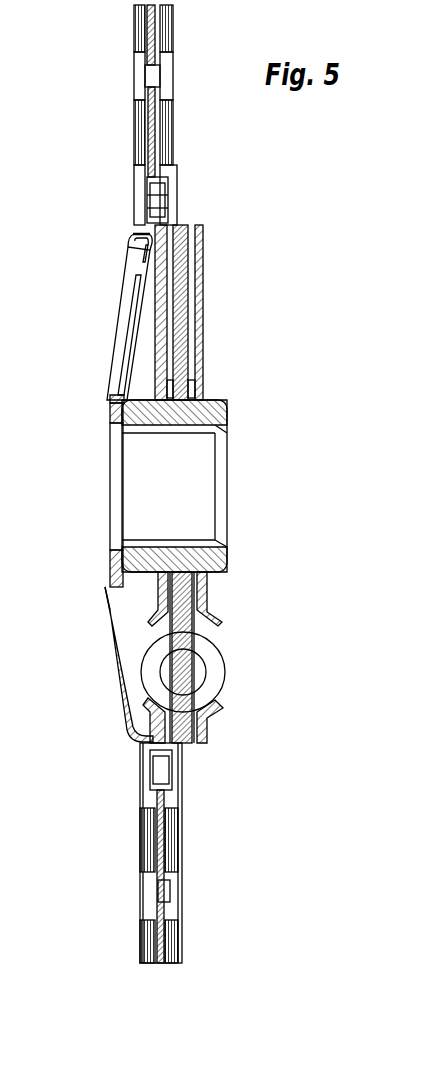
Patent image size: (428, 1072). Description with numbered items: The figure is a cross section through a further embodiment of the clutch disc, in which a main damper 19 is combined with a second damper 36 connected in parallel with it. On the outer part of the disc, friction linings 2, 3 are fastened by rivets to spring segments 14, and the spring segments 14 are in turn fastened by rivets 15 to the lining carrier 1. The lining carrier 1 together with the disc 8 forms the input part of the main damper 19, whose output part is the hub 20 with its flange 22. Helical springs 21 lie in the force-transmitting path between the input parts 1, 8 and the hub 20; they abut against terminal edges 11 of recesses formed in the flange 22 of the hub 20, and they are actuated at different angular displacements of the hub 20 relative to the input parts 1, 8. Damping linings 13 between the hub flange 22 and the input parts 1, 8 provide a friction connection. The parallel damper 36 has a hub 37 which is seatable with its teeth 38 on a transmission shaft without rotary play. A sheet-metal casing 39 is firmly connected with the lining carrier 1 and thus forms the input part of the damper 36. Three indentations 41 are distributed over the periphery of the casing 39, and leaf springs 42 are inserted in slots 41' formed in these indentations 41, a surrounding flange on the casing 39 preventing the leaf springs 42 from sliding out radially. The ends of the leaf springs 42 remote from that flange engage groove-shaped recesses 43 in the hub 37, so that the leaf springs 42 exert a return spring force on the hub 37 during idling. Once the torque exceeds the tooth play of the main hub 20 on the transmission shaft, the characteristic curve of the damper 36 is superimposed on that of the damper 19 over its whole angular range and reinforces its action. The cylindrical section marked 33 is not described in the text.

The lining carrier 1 is at (150, 742).
The friction lining 2 is at (145, 25).
The friction lining 3 is at (170, 32).
The disc 8 is at (207, 728).
The terminal edges 11 is at (183, 676).
The damping linings 13 is at (210, 373).
The spring segments 14 is at (155, 132).
The rivets 15 is at (157, 202).
The main damper 19 is at (277, 729).
The hub 20 is at (230, 560).
The helical springs 21 is at (213, 662).
The hub flange 22 is at (180, 288).
The cylinder body 33 is at (174, 486).
The damper 36 is at (38, 382).
The hub 37 is at (118, 571).
The teeth 38 is at (118, 543).
The sheet-metal casing 39 is at (110, 625).
The indentations 41 is at (109, 317).
The slots 41' is at (107, 264).
The leaf springs 42 is at (120, 372).
The groove-shaped recesses 43 is at (112, 398).